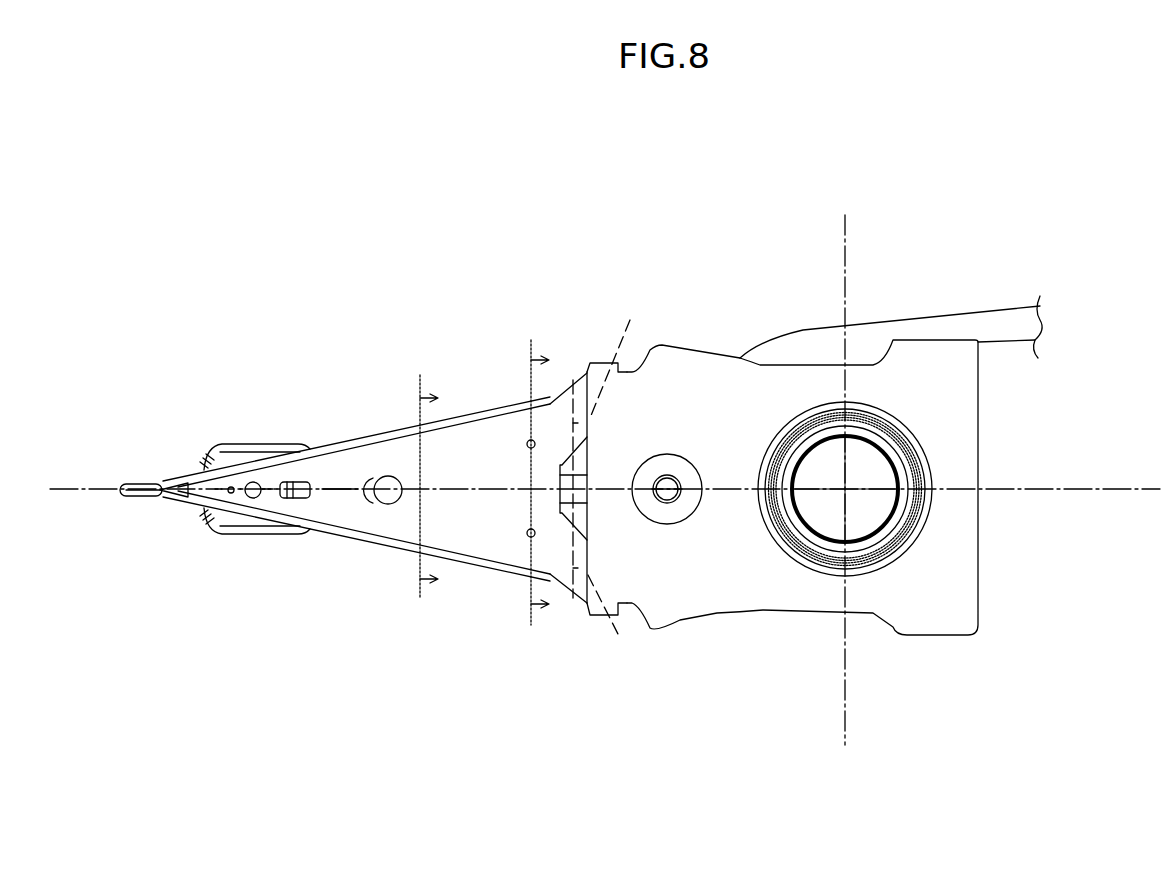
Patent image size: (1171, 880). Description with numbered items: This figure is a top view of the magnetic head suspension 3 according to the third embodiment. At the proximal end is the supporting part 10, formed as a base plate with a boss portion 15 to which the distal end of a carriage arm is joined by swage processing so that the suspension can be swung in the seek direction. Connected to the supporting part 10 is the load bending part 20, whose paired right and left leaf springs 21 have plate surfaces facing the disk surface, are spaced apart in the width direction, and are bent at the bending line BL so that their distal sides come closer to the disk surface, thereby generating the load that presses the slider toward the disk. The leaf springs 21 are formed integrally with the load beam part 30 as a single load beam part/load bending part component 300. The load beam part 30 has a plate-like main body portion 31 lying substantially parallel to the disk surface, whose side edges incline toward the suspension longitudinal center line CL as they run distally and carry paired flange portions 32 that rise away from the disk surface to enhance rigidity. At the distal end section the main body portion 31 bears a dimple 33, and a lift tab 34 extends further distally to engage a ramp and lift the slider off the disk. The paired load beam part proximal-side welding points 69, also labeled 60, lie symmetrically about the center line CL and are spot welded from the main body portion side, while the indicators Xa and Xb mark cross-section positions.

The magnetic head suspension 3 is at (763, 268).
The supporting part 10 is at (960, 411).
The boss portion 15 is at (883, 528).
The load bending part 20 is at (573, 488).
The leaf springs 21 is at (574, 369).
The load beam part 30 is at (375, 529).
The load beam part/load bending part component 300 is at (543, 615).
The main body portion 31 is at (361, 523).
The flange portions 32 is at (366, 440).
The dimple 33 is at (253, 482).
The lift tab 34 is at (140, 484).
The fastening portion 60 is at (489, 497).
The load beam part proximal-side welding points 69 is at (527, 445).
The bending line BL is at (614, 480).
The suspension longitudinal center line CL is at (1107, 487).
The section line Xa is at (527, 482).
The section line Xb is at (416, 486).